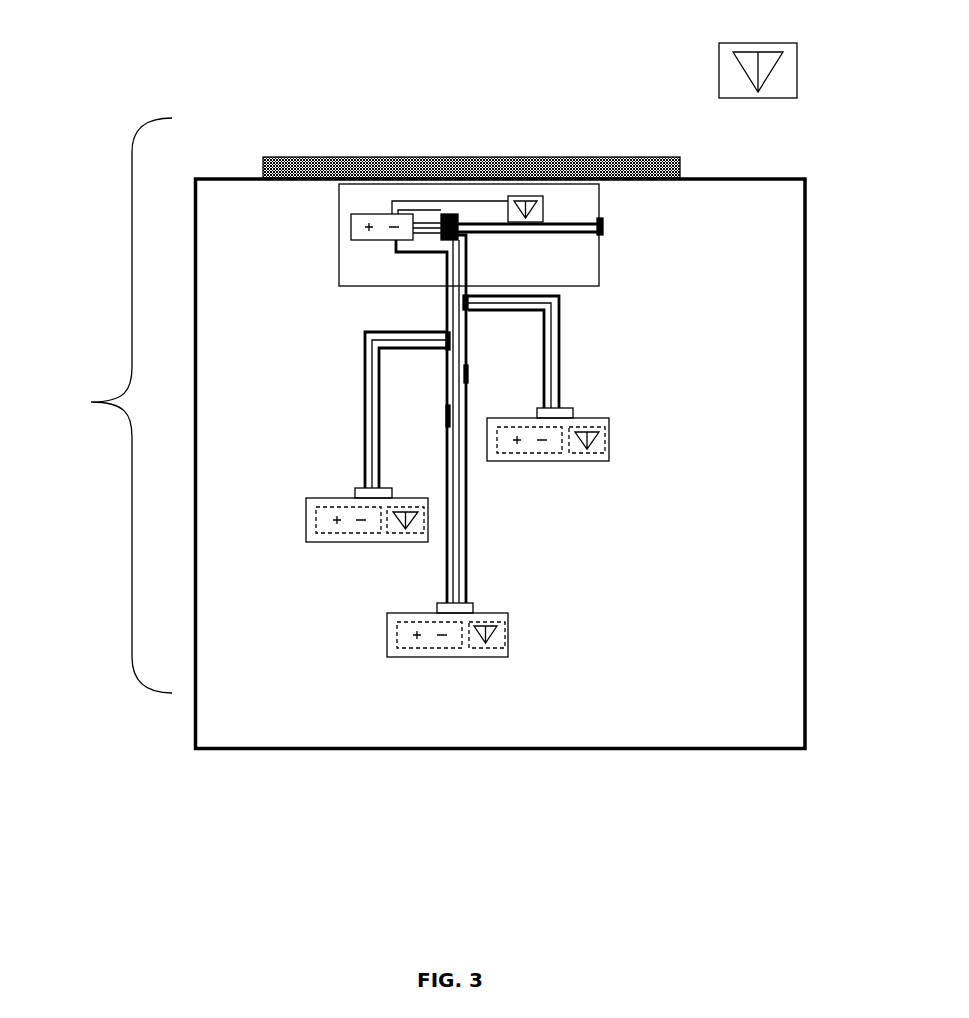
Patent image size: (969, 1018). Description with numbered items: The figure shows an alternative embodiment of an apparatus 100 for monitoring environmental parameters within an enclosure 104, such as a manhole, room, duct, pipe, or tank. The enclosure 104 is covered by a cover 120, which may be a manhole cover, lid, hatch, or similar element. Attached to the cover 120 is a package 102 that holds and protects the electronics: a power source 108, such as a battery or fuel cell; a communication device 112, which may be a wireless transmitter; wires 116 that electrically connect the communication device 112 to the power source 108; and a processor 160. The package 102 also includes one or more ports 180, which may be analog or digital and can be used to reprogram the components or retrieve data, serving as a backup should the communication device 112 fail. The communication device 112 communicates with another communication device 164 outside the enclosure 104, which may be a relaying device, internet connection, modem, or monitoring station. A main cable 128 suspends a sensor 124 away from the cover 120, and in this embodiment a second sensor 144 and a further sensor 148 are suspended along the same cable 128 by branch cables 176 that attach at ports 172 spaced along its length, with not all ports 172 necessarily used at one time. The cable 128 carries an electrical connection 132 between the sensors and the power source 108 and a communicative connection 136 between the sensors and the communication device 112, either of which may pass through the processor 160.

The apparatus 100 is at (100, 405).
The package 102 is at (325, 270).
The enclosure 104 is at (662, 462).
The power source 108 is at (348, 228).
The communication device 112 is at (546, 210).
The wires 116 is at (455, 190).
The cover 120 is at (305, 160).
The sensor 124 is at (512, 597).
The cable 128 is at (458, 419).
The electrical connection 132 is at (445, 575).
The communicative connection 136 is at (465, 592).
The second sensor 144 is at (592, 413).
The further sensor 148 is at (325, 496).
The processor 160 is at (475, 236).
The communication device 164 is at (712, 82).
The ports 172 is at (455, 300).
The branch cables 176 is at (568, 327).
The ports 180 is at (603, 243).